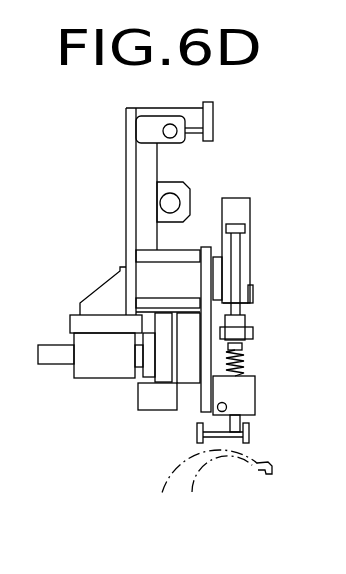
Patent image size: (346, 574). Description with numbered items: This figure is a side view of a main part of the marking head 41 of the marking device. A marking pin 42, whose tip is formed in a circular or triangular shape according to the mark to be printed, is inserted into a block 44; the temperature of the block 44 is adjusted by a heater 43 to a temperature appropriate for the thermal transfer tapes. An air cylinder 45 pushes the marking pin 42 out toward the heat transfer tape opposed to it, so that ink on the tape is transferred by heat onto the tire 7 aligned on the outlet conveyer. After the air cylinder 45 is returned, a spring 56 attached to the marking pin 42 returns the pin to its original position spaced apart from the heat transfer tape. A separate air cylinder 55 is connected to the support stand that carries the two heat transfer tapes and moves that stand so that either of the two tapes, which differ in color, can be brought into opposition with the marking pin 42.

The marking head 41 is at (247, 166).
The air cylinder 45 is at (250, 263).
The spring 56 is at (245, 362).
The block 44 is at (255, 397).
The marking pin 42 is at (250, 432).
The heater 43 is at (198, 412).
The air cylinder 55 is at (103, 378).
The tire 7 is at (178, 465).